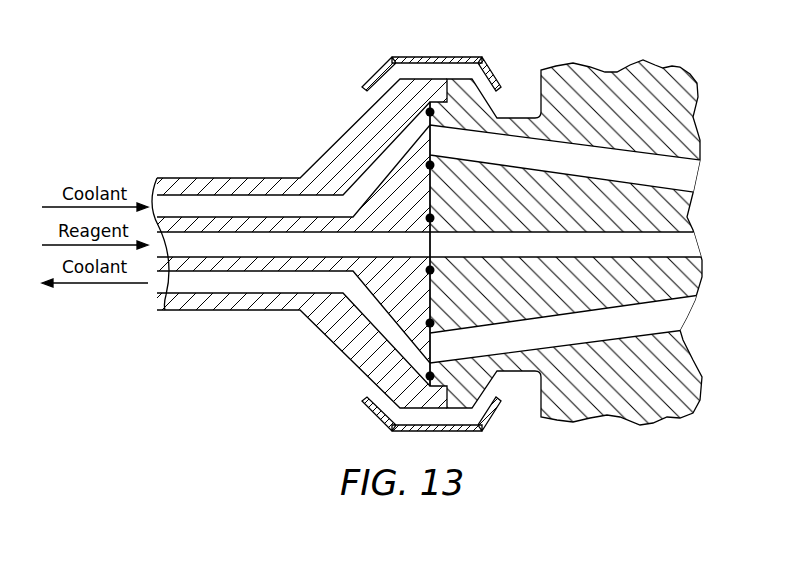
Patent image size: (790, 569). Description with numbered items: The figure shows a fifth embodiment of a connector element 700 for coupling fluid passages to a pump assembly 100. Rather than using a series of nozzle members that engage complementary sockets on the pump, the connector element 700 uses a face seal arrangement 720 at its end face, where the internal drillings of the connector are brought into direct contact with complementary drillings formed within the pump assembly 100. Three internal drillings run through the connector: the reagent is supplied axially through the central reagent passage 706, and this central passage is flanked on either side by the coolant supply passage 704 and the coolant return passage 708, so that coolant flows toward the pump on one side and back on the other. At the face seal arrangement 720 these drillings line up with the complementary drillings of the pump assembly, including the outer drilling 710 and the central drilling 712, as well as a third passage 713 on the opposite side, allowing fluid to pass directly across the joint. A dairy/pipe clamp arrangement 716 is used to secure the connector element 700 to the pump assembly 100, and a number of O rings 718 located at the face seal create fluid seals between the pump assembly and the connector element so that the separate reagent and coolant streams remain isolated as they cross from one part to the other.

The pump assembly 100 is at (700, 422).
The connector element 700 is at (291, 345).
The coolant supply passage 704 is at (205, 198).
The reagent passage 706 is at (265, 222).
The coolant return passage 708 is at (206, 288).
The complementary drilling 710 is at (688, 178).
The complementary drilling 712 is at (693, 243).
The lower injection passage 713 is at (678, 311).
The dairy/pipe clamp arrangement 716 is at (455, 57).
The O rings 718 is at (437, 163).
The face seal arrangement 720 is at (430, 193).